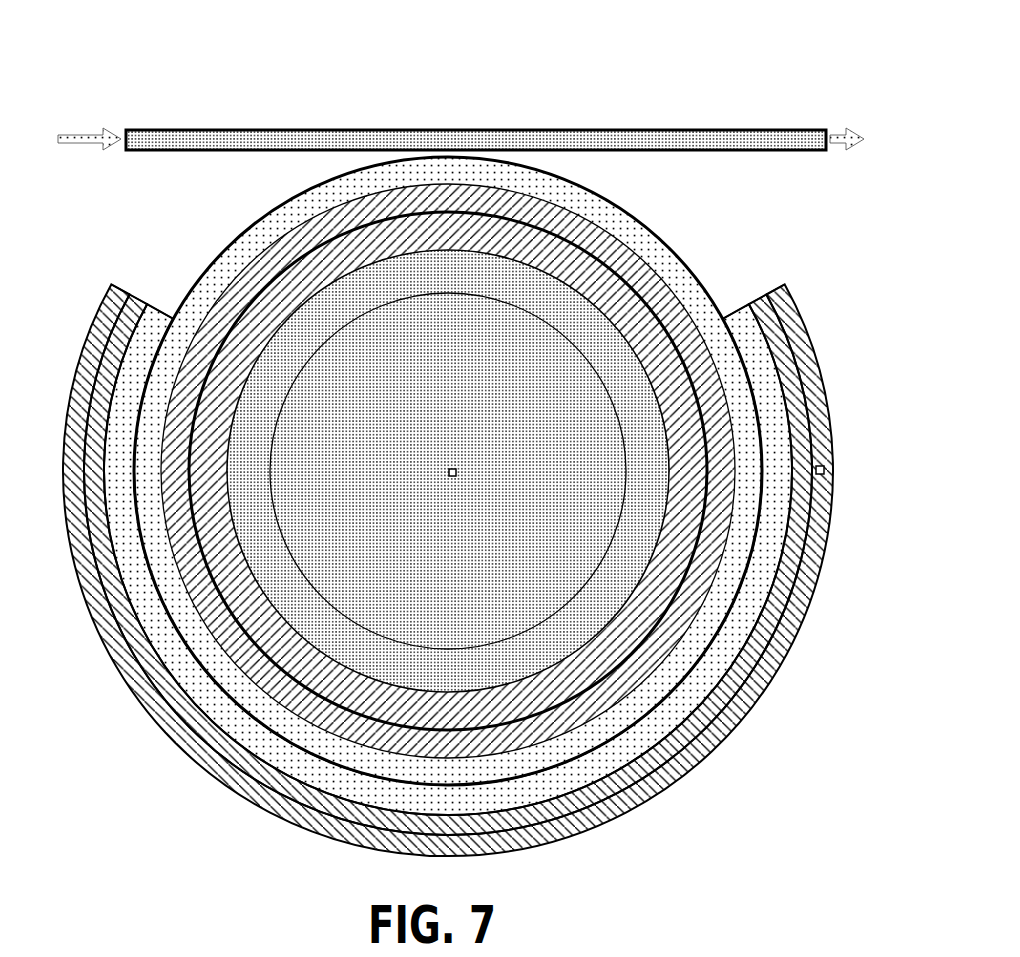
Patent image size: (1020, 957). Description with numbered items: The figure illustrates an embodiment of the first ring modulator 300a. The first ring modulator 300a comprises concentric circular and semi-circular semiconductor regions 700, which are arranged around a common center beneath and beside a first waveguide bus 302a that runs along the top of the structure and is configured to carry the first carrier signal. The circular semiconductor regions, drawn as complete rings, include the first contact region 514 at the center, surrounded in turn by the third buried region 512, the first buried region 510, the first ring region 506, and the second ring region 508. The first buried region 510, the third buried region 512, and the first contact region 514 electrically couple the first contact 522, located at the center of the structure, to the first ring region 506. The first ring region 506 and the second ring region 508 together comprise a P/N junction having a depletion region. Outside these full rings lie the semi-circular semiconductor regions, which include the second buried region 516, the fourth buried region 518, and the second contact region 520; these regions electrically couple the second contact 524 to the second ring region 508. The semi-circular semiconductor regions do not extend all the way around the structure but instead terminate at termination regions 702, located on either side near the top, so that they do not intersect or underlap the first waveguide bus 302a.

The first ring modulator 300a is at (172, 64).
The first waveguide bus 302a is at (594, 122).
The first ring region 506 is at (277, 241).
The second ring region 508 is at (303, 197).
The first buried region 510 is at (245, 293).
The third buried region 512 is at (523, 290).
The first contact region 514 is at (520, 340).
The second buried region 516 is at (138, 602).
The fourth buried region 518 is at (130, 637).
The second contact region 520 is at (120, 663).
The first contact 522 is at (440, 462).
The second contact 524 is at (817, 458).
The concentric circular and semi-circular semiconductor regions 700 is at (469, 506).
The termination regions 702 is at (130, 298).